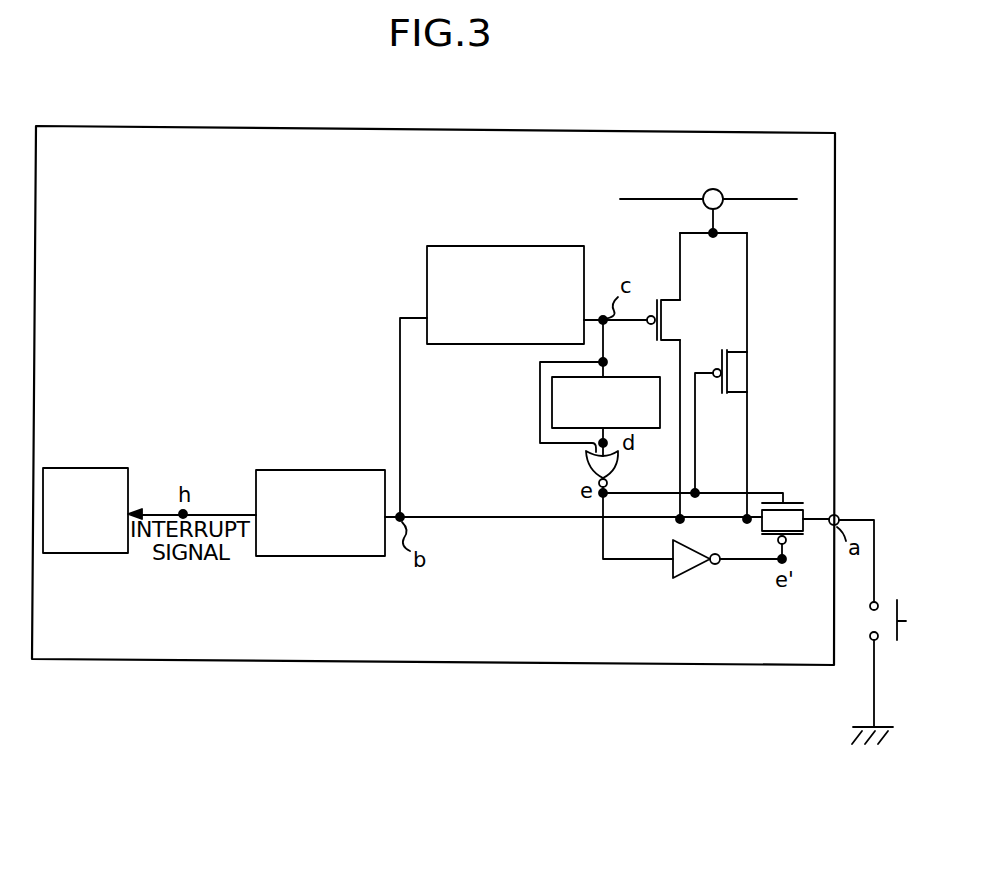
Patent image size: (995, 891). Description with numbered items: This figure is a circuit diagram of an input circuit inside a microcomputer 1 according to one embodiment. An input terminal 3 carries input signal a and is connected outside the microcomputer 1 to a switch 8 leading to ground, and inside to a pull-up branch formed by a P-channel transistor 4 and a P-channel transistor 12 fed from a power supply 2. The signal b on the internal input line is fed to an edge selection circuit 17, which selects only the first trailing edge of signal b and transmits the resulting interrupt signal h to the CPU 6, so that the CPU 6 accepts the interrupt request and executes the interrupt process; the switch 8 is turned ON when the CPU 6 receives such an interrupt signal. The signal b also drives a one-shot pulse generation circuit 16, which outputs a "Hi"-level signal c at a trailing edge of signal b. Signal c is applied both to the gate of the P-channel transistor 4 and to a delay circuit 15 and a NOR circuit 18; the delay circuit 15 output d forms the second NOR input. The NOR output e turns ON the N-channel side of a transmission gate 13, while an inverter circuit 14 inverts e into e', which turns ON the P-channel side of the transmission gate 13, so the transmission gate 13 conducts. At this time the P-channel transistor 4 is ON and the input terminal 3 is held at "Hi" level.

The microcomputer 1 is at (806, 133).
The power supply 2 is at (722, 192).
The input terminal 3 is at (838, 514).
The P-channel transistor 4 is at (657, 299).
The CPU 6 is at (108, 469).
The switch 8 is at (866, 622).
The P-channel transistor 12 is at (742, 369).
The transmission gate 13 is at (790, 502).
The inverter circuit 14 is at (697, 575).
The delay circuit 15 is at (627, 380).
The one-shot pulse generation circuit 16 is at (552, 252).
The edge selection circuit 17 is at (358, 471).
The NOR circuit 18 is at (586, 457).